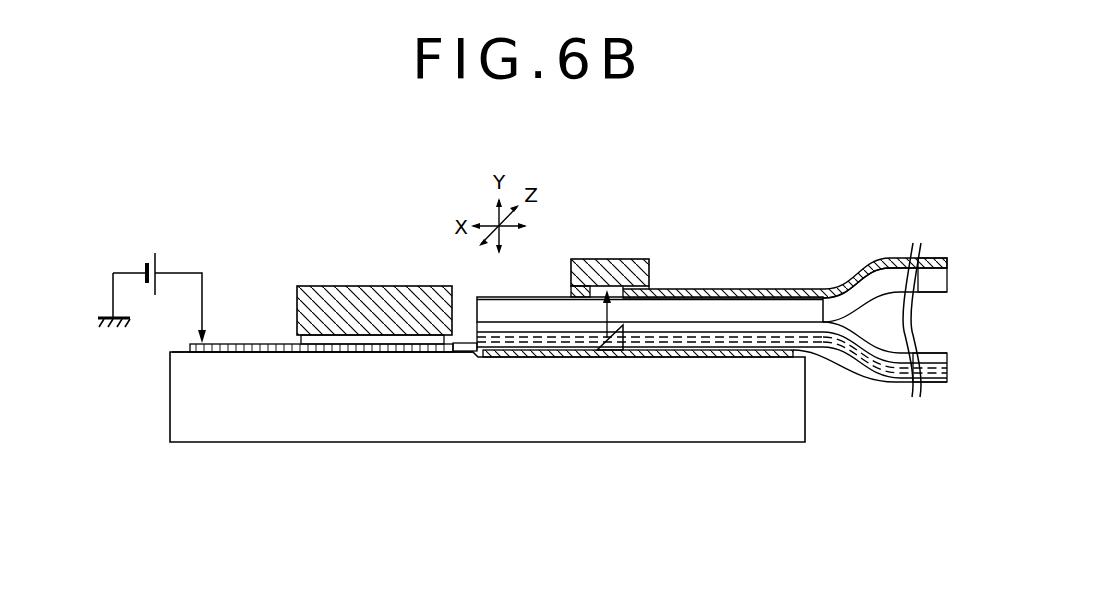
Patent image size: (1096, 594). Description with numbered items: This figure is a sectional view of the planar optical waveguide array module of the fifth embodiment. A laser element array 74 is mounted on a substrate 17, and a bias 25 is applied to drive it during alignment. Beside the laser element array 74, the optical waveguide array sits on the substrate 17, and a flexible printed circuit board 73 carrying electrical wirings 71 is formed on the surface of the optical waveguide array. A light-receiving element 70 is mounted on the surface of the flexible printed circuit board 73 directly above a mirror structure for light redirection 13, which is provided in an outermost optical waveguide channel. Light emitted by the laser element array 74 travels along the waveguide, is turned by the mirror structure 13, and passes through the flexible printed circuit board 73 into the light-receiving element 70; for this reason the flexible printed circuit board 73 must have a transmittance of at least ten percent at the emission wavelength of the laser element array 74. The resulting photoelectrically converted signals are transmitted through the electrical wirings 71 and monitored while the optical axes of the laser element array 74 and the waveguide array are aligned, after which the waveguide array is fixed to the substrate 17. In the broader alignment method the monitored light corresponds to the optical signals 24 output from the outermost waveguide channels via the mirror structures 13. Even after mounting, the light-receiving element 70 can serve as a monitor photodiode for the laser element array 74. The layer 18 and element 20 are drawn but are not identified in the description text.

The mirror structure for light redirection 13 is at (613, 345).
The substrate 17 is at (385, 383).
The electrode layer 18 is at (255, 344).
The substrate 20 is at (742, 403).
The optical signals 24 is at (463, 347).
The bias 25 is at (152, 303).
The light-receiving element 70 is at (610, 270).
The electrical wiring 71 is at (712, 293).
The flexible printed circuit board 73 is at (793, 314).
The laser element array 74 is at (377, 306).